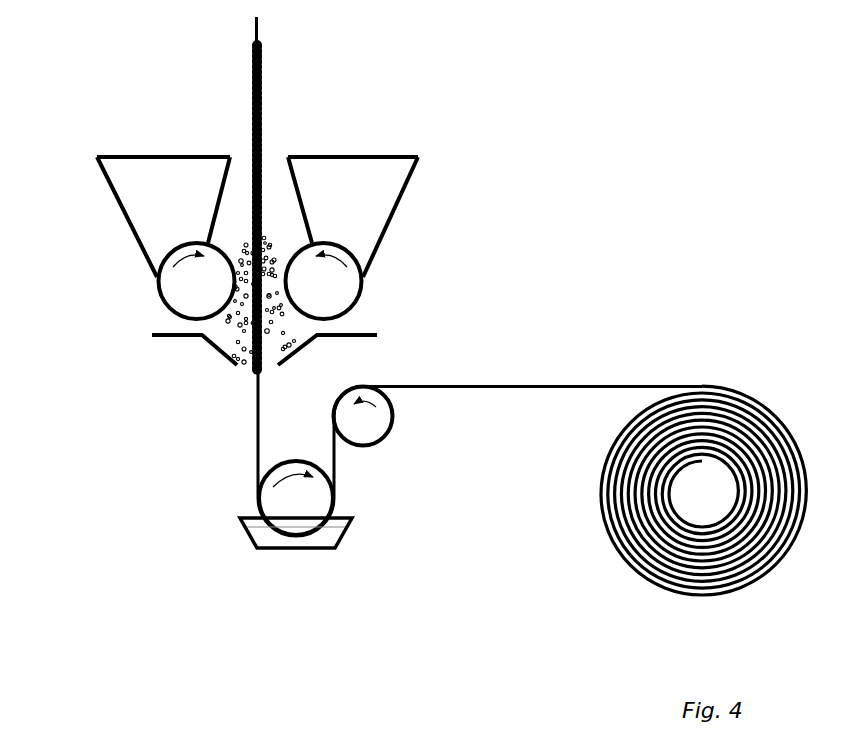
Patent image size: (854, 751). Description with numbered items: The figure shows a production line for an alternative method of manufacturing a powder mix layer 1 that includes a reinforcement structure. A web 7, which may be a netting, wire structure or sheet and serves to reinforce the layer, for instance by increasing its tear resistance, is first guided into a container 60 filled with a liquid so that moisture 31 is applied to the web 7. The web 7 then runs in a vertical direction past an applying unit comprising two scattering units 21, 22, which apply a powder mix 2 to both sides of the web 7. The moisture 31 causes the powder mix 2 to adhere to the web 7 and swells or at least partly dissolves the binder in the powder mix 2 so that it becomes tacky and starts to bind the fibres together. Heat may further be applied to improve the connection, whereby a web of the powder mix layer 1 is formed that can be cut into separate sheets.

The powder mix layer 1 is at (284, 108).
The powder mix 2 is at (285, 333).
The scattering unit 21 is at (387, 262).
The scattering unit 22 is at (131, 283).
The web 7 is at (588, 385).
The moisture 31 is at (325, 537).
The container 60 is at (240, 505).